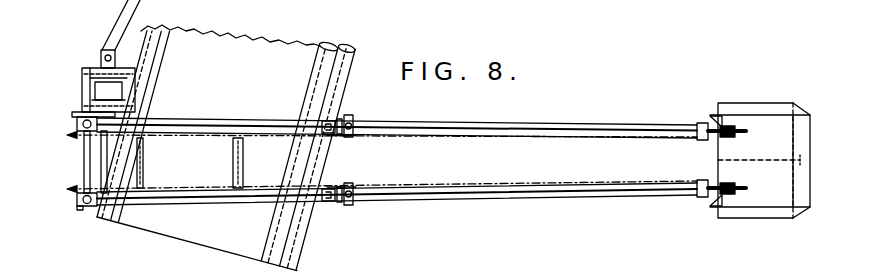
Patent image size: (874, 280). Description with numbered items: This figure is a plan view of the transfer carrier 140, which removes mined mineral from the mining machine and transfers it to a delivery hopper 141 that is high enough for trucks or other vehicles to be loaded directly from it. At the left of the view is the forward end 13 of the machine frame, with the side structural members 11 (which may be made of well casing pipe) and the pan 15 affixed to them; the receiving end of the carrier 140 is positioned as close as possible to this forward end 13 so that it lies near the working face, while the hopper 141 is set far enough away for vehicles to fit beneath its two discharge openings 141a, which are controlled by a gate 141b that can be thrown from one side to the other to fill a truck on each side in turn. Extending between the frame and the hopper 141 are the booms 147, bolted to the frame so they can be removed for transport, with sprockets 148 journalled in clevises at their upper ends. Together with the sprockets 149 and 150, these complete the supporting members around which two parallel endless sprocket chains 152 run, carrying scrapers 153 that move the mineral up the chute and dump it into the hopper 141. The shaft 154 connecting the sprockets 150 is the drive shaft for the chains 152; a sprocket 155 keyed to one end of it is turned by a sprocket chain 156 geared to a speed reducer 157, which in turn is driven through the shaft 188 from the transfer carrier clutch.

The side structural members 11 is at (100, 217).
The forward end 13 is at (200, 244).
The pan 15 is at (235, 54).
The transfer carrier 140 is at (391, 160).
The delivery hopper 141 is at (761, 162).
The discharge openings 141a is at (760, 102).
The gate 141b is at (765, 187).
The booms 147 is at (575, 190).
The sprockets 148 is at (727, 176).
The sprockets 149 is at (348, 189).
The sprockets 150 is at (77, 136).
The endless sprocket chains 152 is at (281, 163).
The scrapers 153 is at (231, 133).
The shaft 154 is at (84, 178).
The sprocket 155 is at (77, 113).
The sprocket chain 156 is at (97, 88).
The speed reducer 157 is at (94, 71).
The shaft 188 is at (118, 25).